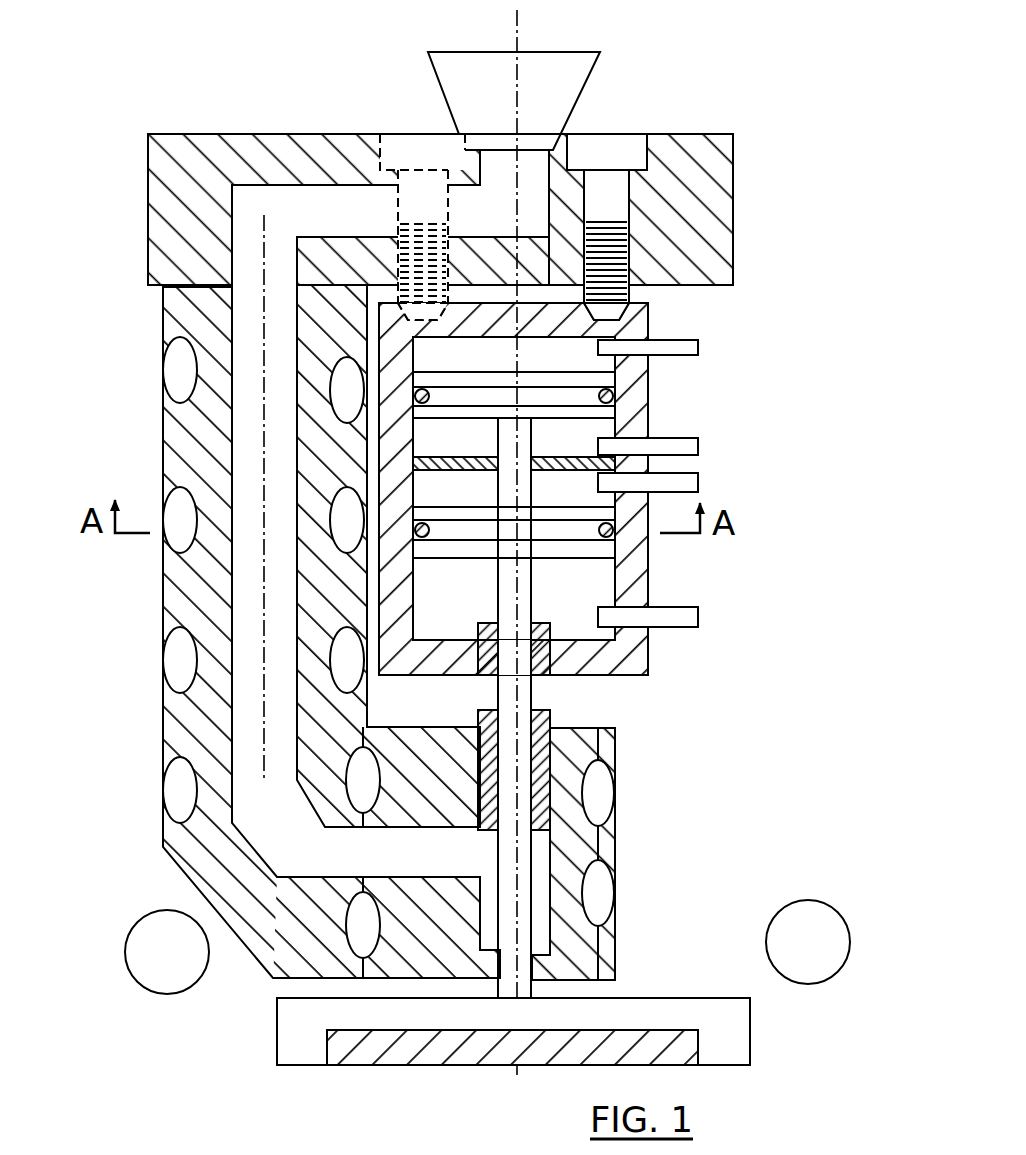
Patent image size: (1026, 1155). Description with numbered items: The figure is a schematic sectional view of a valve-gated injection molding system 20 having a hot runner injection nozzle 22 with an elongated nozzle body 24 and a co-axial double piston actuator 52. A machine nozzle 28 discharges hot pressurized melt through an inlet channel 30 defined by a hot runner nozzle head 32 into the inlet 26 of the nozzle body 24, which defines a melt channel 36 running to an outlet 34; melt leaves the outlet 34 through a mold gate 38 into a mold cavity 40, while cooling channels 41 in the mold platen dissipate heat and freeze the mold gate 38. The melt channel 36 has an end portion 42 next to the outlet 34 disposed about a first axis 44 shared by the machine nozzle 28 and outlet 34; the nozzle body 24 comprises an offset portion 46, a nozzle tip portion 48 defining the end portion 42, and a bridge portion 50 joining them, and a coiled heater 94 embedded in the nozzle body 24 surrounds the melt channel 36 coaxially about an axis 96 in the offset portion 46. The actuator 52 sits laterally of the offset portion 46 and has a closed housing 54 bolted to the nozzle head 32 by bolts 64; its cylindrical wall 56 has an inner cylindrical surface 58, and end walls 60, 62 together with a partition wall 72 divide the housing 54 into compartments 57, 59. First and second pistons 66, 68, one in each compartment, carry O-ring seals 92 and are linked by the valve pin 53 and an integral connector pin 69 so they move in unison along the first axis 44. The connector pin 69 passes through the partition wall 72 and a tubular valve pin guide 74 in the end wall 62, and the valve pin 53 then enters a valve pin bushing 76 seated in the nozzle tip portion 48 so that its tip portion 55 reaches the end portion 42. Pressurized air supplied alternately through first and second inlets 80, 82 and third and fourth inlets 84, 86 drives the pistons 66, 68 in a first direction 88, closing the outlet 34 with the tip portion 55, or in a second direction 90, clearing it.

The valve-gated injection molding system 20 is at (262, 92).
The hot runner injection nozzle 22 is at (125, 418).
The nozzle body 24 is at (165, 592).
The inlet 26 is at (250, 304).
The machine nozzle 28 is at (568, 88).
The inlet channel 30 is at (503, 200).
The hot runner nozzle head 32 is at (165, 245).
The outlet 34 is at (532, 988).
The melt channel 36 is at (240, 708).
The mold gate 38 is at (520, 1003).
The mold cavity 40 is at (295, 1040).
The cooling channels 41 is at (140, 960).
The end portion 42 is at (538, 888).
The first axis 44 is at (518, 33).
The offset portion 46 is at (175, 462).
The nozzle tip portion 48 is at (588, 940).
The bridge portion 50 is at (247, 952).
The co-axial pneumatic double piston actuator 52 is at (777, 335).
The valve pin 53 is at (523, 792).
The housing 54 is at (657, 676).
The tip portion 55 is at (502, 958).
The cylindrical wall 56 is at (640, 387).
The compartment 57 is at (590, 375).
The inner cylindrical surface 58 is at (413, 618).
The compartment 59 is at (590, 574).
The end wall 60 is at (618, 330).
The end wall 62 is at (590, 667).
The bolts 64 is at (410, 134).
The first piston 66 is at (487, 373).
The second piston 68 is at (477, 510).
The connector pin 69 is at (522, 445).
The partition wall 72 is at (487, 453).
The valve pin guide 74 is at (483, 623).
The valve pin bushing 76 is at (480, 717).
The first fluid inlet 80 is at (657, 338).
The second fluid inlet 82 is at (690, 447).
The third inlet 84 is at (690, 480).
The fourth inlet 86 is at (690, 618).
The first direction 88 is at (814, 535).
The second direction 90 is at (814, 395).
The O-ring seals 92 is at (610, 397).
The coiled heater 94 is at (178, 360).
The axis 96 is at (268, 237).